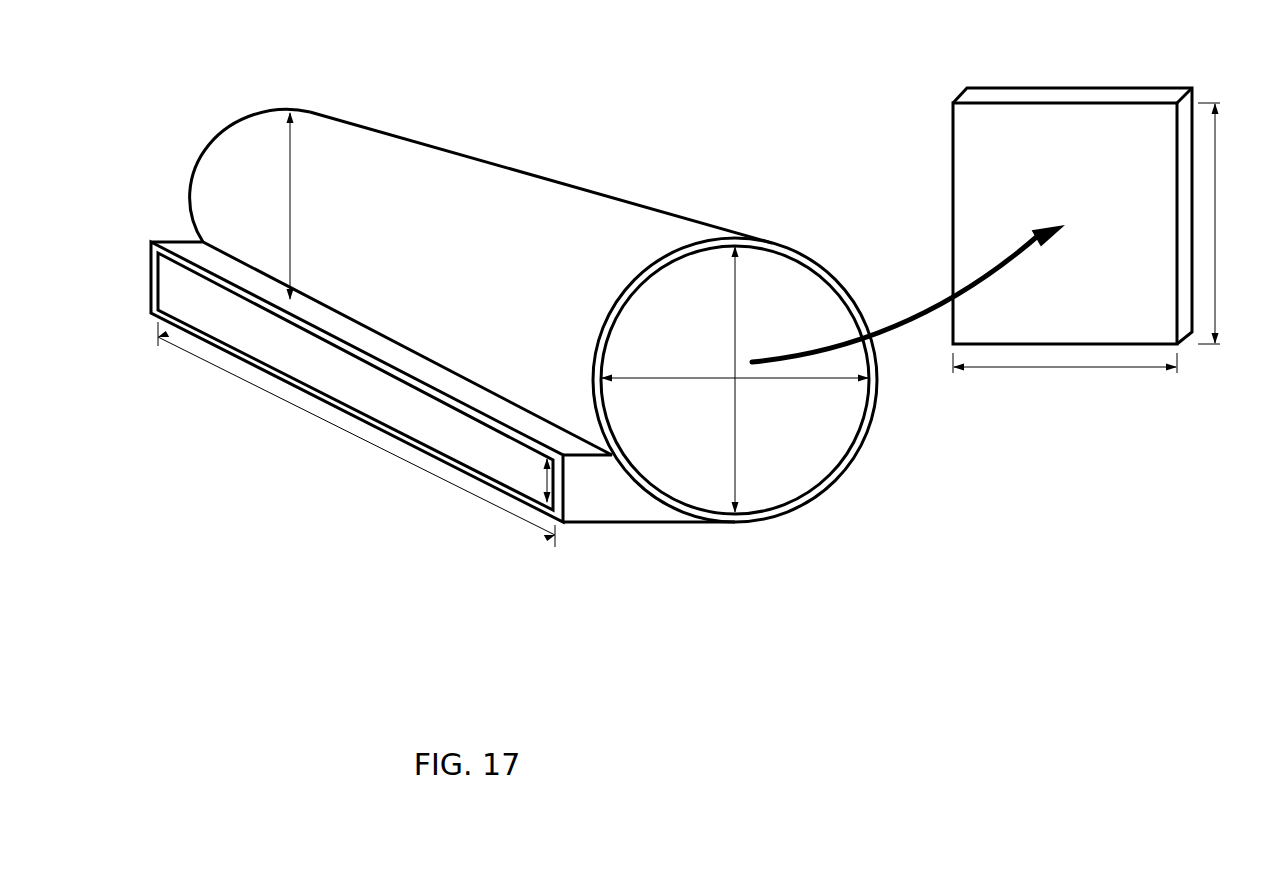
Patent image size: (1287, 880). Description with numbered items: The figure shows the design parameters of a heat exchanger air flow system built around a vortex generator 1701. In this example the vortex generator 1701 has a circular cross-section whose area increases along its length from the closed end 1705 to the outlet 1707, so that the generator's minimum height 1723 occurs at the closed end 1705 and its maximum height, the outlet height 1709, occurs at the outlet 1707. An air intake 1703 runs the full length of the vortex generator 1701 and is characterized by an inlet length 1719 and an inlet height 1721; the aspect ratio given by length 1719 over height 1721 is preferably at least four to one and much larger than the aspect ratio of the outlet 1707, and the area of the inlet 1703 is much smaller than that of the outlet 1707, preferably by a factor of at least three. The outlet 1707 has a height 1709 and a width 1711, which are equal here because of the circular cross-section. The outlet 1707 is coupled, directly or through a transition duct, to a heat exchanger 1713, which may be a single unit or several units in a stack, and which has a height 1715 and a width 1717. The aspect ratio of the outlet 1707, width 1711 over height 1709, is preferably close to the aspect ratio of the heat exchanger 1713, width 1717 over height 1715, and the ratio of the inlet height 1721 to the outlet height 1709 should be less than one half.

The vortex generator 1701 is at (589, 313).
The air intake 1703 is at (443, 382).
The closed end 1705 is at (207, 146).
The outlet 1707 is at (790, 275).
The outlet height 1709 is at (742, 459).
The outlet width 1711 is at (817, 386).
The heat exchanger 1713 is at (1072, 216).
The heat exchanger height 1715 is at (1221, 180).
The heat exchanger width 1717 is at (1072, 374).
The inlet length 1719 is at (329, 426).
The inlet height 1721 is at (554, 481).
The closed-end height 1723 is at (300, 204).